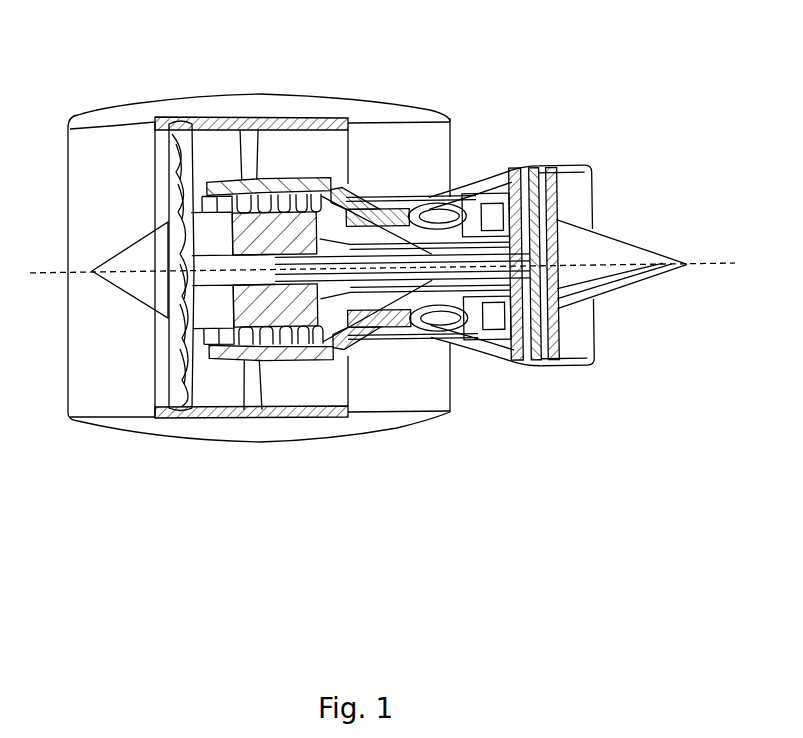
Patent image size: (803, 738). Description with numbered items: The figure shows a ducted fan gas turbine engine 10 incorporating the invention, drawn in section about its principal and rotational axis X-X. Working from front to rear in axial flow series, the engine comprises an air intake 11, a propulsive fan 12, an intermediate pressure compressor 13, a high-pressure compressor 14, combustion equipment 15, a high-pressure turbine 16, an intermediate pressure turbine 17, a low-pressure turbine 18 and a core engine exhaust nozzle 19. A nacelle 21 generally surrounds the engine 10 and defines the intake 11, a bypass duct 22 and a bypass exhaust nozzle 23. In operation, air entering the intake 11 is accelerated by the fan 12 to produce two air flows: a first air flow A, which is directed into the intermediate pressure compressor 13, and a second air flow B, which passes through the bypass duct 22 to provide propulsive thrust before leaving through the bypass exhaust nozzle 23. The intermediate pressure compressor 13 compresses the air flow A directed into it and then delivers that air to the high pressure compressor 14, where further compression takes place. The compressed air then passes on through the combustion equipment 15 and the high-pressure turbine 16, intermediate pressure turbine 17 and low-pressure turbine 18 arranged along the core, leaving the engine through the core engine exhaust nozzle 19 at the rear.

The ducted fan gas turbine engine 10 is at (127, 81).
The air intake 11 is at (112, 127).
The propulsive fan 12 is at (170, 372).
The intermediate pressure compressor 13 is at (282, 352).
The high-pressure compressor 14 is at (380, 208).
The combustion equipment 15 is at (400, 324).
The high-pressure turbine 16 is at (460, 350).
The intermediate pressure turbine 17 is at (488, 186).
The low-pressure turbine 18 is at (515, 356).
The core engine exhaust nozzle 19 is at (591, 166).
The nacelle 21 is at (262, 93).
The bypass duct 22 is at (427, 151).
The bypass exhaust nozzle 23 is at (453, 118).
The first air flow A is at (208, 201).
The second air flow B is at (226, 158).